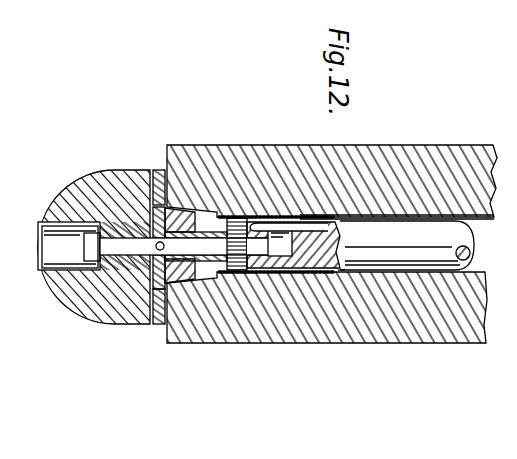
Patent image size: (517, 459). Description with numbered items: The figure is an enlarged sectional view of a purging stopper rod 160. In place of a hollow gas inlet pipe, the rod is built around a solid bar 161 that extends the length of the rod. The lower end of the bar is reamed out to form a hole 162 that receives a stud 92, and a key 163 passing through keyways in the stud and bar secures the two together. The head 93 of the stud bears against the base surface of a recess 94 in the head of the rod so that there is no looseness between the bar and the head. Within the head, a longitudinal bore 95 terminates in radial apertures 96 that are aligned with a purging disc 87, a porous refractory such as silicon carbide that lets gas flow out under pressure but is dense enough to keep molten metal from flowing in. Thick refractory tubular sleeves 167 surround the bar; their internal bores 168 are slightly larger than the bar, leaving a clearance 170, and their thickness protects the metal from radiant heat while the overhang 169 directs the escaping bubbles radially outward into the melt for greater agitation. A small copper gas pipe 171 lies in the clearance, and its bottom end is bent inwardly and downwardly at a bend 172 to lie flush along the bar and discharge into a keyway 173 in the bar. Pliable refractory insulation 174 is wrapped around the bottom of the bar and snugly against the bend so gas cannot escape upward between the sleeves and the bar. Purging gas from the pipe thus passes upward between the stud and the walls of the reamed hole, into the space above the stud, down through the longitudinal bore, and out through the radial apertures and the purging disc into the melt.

The purging disc 87 is at (158, 325).
The stud 92 is at (147, 205).
The head 93 is at (88, 245).
The recess 94 is at (38, 250).
The longitudinal bore 95 is at (211, 283).
The radial apertures 96 is at (157, 280).
The purging stopper rod 160 is at (338, 206).
The solid bar 161 is at (470, 250).
The reamed hole 162 is at (292, 256).
The key 163 is at (243, 272).
The tubular sleeves 167 is at (235, 157).
The internal bores 168 is at (347, 283).
The overhang 169 is at (162, 168).
The clearance 170 is at (483, 279).
The gas pipe 171 is at (400, 213).
The bend 172 is at (335, 213).
The keyway 173 is at (268, 268).
The pliable refractory insulation 174 is at (322, 275).